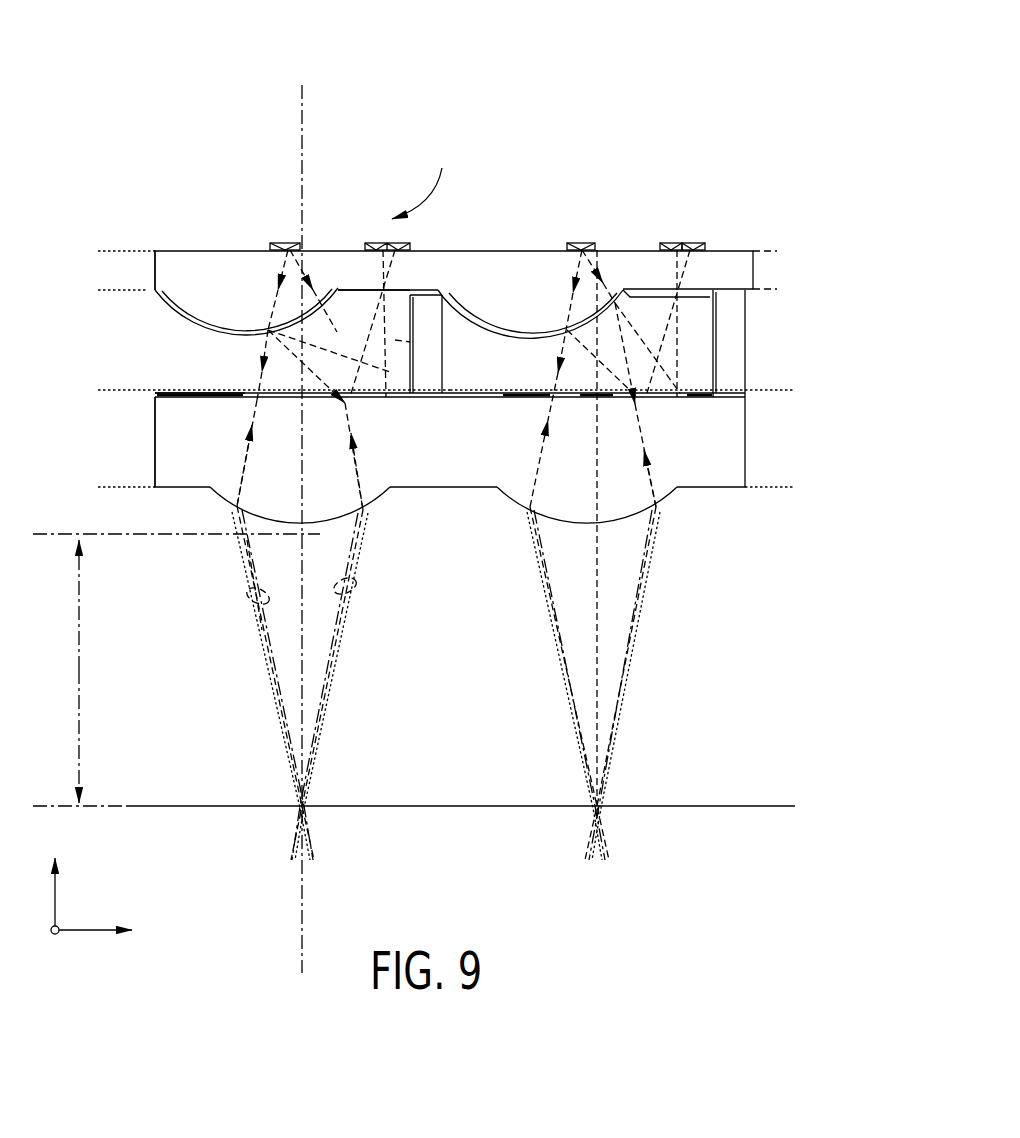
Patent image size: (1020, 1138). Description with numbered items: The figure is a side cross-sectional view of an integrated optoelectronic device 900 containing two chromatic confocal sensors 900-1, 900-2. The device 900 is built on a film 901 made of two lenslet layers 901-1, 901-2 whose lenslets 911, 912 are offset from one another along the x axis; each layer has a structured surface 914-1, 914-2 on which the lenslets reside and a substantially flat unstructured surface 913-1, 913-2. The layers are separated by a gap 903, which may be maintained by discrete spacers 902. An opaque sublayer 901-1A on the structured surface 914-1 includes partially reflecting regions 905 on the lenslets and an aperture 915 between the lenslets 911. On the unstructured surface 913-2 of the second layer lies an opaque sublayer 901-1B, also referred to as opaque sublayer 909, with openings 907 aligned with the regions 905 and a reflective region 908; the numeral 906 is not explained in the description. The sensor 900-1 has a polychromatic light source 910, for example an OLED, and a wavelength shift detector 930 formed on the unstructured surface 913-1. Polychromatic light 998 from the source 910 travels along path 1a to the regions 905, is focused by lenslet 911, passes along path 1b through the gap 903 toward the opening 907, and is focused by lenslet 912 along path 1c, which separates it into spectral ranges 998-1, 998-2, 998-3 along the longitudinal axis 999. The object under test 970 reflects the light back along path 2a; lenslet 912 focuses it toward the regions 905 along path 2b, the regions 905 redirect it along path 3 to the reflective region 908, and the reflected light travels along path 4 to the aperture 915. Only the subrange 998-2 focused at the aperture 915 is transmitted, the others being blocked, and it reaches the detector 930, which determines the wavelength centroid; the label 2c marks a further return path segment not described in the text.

The integrated optoelectronic device 900 is at (476, 84).
The chromatic confocal sensor 900-1 is at (174, 156).
The chromatic confocal sensor 900-2 is at (636, 206).
The film 901 is at (130, 256).
The lenslet layer 901-1 is at (760, 257).
The sublayer 901-1A is at (155, 297).
The sublayer 901-1B is at (157, 402).
The lenslet layer 901-2 is at (750, 447).
The spacer 902 is at (441, 342).
The gap 903 is at (703, 372).
The region 905 is at (389, 344).
The layer 906 is at (165, 388).
The opening 907 is at (300, 399).
The reflective region 908 is at (420, 400).
The opaque sublayer 909 is at (153, 399).
The polychromatic light source 910 is at (270, 246).
The lenslet 911 is at (196, 270).
The lenslet 912 is at (215, 497).
The unstructured surface 913-1 is at (527, 249).
The unstructured surface 913-2 is at (517, 393).
The structured surface 914-1 is at (703, 292).
The structured surface 914-2 is at (723, 488).
The aperture 915 is at (384, 289).
The wavelength shift detector 930 is at (418, 248).
The object under test 970 is at (720, 806).
The polychromatic light 998 is at (258, 364).
The spectral range 998-1 is at (326, 702).
The spectral range 998-2 is at (262, 668).
The spectral range 998-3 is at (266, 690).
The longitudinal axis 999 is at (302, 903).
The path 1a is at (305, 252).
The path 1b is at (250, 386).
The path 1c is at (248, 432).
The path 2a is at (255, 633).
The path 2b is at (243, 486).
The returning ray in cavity 2c is at (320, 430).
The path 3 is at (340, 305).
The path 4 is at (400, 341).